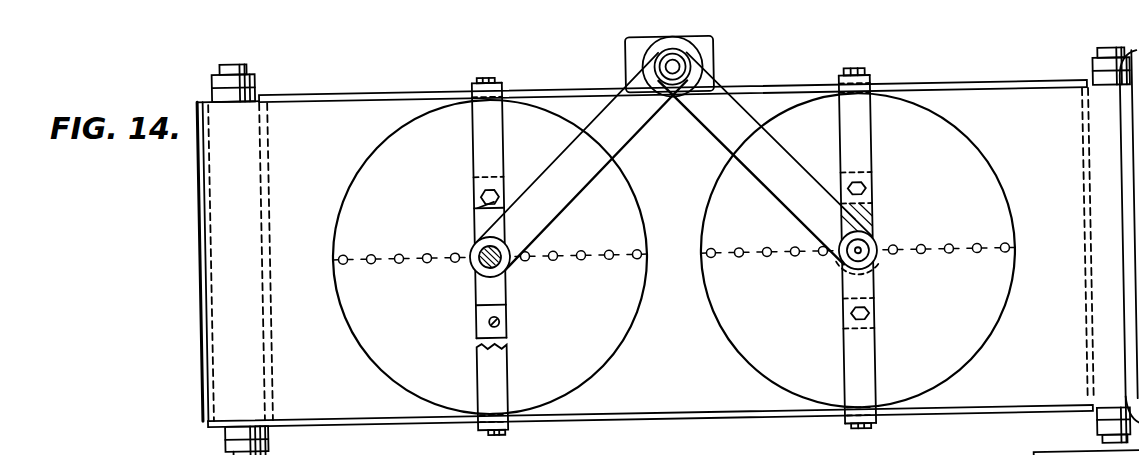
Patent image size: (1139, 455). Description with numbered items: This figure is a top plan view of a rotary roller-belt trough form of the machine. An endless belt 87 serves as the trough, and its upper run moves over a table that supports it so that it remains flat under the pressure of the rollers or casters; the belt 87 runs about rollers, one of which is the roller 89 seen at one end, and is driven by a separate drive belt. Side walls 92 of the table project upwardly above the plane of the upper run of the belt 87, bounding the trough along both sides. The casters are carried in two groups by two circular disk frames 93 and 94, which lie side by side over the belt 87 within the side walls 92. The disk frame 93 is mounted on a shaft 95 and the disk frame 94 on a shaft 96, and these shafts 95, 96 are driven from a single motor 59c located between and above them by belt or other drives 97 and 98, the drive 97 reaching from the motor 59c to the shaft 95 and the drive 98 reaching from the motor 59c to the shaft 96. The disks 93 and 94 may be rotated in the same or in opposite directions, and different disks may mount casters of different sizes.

The motor 59c is at (711, 66).
The endless belt 87 is at (623, 404).
The roller 89 is at (1096, 78).
The side walls 92 is at (377, 424).
The disk frame 93 is at (615, 329).
The disk frame 94 is at (752, 348).
The shaft 95 is at (482, 273).
The shaft 96 is at (872, 268).
The belt or other drive 97 is at (628, 143).
The belt or other drive 98 is at (717, 150).